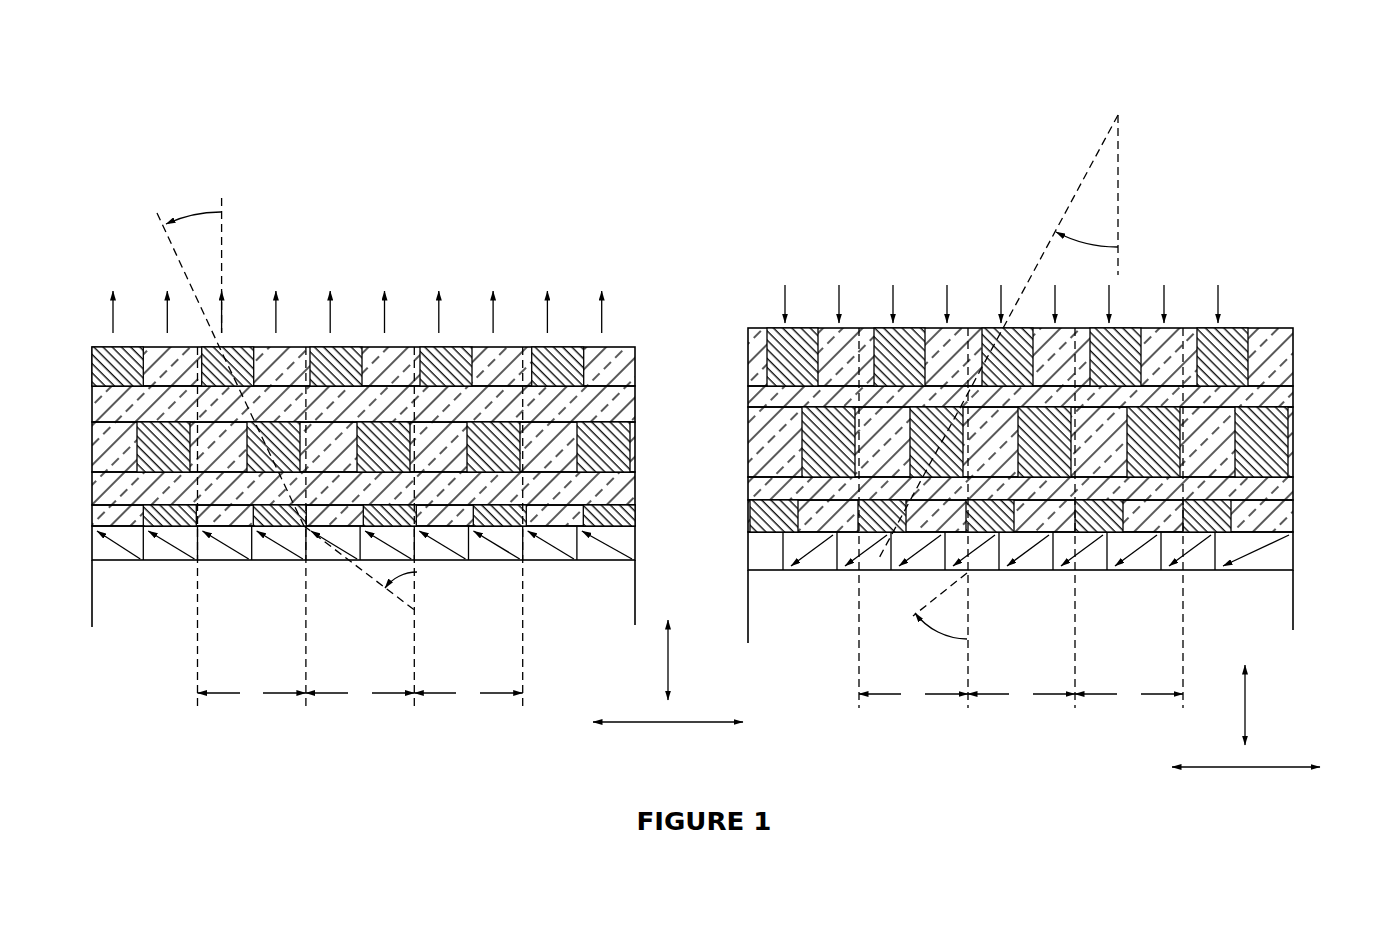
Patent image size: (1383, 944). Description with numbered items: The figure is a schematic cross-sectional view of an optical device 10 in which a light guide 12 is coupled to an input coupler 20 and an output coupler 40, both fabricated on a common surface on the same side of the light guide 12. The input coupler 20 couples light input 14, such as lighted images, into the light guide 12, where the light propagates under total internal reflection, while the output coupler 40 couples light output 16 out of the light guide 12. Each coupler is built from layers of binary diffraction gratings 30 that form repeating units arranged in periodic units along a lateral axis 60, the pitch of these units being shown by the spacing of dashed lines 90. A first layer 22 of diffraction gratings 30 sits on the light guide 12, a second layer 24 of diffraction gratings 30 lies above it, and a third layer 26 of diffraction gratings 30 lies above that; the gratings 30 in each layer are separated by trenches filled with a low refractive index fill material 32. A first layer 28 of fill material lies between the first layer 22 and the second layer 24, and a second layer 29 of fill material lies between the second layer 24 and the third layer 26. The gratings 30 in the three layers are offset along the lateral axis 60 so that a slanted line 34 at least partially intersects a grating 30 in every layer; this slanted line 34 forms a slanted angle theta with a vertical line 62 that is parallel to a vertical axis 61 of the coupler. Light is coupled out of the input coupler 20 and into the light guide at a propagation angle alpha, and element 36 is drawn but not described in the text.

The optical device 10 is at (376, 121).
The light guide 12 is at (623, 547).
The light input 14 is at (947, 298).
The light output 16 is at (222, 243).
The input coupler 20 is at (1188, 262).
The first layer 22 is at (625, 512).
The second layer 24 is at (628, 448).
The third layer 26 is at (625, 353).
The first layer of fill material 28 is at (625, 487).
The second layer of fill material 29 is at (625, 402).
The diffraction gratings 30 is at (111, 346).
The fill material 32 is at (165, 346).
The slanted line 34 is at (292, 500).
The exiting light ray 36 is at (357, 570).
The output coupler 40 is at (374, 248).
The lateral axis 60 is at (700, 722).
The vertical axis 61 is at (668, 658).
The vertical line 62 is at (1120, 190).
The dashed lines 90 is at (197, 614).